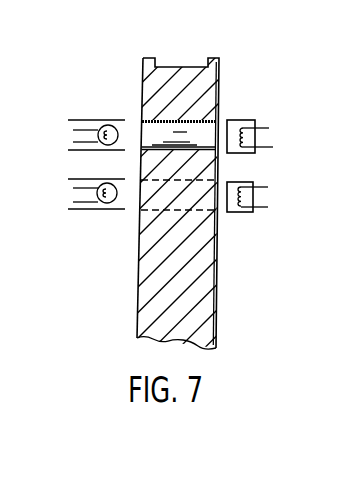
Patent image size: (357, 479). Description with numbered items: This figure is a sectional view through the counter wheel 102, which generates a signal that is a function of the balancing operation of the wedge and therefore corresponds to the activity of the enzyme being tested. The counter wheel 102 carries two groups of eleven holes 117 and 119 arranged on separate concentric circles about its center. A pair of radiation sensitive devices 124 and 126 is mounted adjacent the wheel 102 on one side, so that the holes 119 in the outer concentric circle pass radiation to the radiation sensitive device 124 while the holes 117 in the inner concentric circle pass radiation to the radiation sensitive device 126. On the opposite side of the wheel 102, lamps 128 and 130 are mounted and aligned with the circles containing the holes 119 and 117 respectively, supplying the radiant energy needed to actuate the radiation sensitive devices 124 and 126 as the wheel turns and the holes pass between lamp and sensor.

The counter wheel 102 is at (175, 67).
The holes 117 is at (170, 200).
The holes 119 is at (157, 118).
The radiation sensitive device 124 is at (240, 120).
The radiation sensitive device 126 is at (237, 212).
The lamp 128 is at (105, 125).
The lamp 130 is at (105, 204).